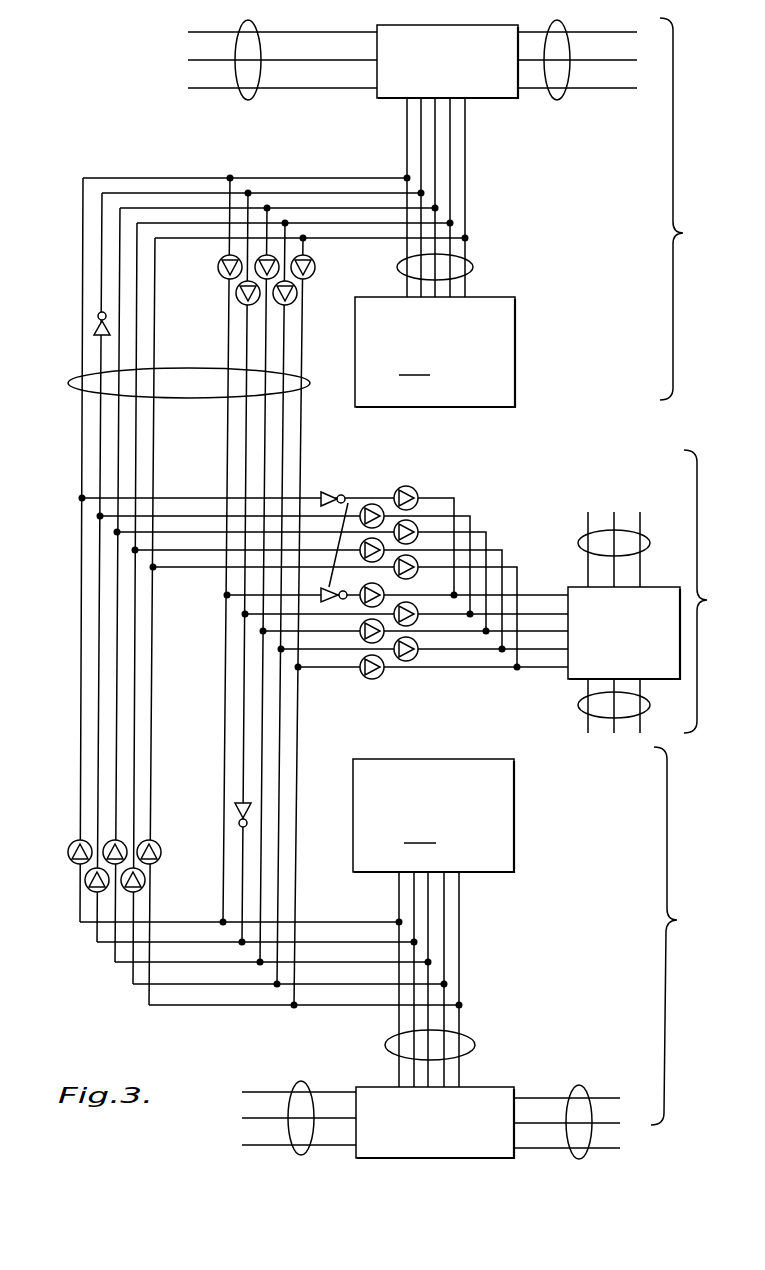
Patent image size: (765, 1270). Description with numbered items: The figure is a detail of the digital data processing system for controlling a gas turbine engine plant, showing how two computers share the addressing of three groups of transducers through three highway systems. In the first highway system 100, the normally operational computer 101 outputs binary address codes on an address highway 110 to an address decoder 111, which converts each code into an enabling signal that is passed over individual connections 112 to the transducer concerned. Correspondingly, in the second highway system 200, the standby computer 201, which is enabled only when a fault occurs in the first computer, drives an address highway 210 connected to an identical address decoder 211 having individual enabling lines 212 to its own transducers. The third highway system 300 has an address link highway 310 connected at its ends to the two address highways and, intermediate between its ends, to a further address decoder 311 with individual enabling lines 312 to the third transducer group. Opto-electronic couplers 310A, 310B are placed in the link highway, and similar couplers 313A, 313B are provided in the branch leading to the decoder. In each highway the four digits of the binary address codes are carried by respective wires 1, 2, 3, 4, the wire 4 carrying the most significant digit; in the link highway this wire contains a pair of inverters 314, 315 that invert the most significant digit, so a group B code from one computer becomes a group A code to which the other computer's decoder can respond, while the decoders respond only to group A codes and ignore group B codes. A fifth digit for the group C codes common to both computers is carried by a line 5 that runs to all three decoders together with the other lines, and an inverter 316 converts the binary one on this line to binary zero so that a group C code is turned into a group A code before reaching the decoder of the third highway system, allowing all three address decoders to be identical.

The wire 1 is at (465, 218).
The wire 2 is at (450, 189).
The wire 3 is at (435, 164).
The wire 4 is at (421, 143).
The line 5 is at (409, 128).
The first highway system 100 is at (695, 209).
The computer 101 is at (435, 352).
The address highway 110 is at (473, 267).
The address decoder 111 is at (393, 101).
The individual connections 112 is at (248, 99).
The second highway system 200 is at (693, 936).
The computer 201 is at (433, 815).
The address highway 210 is at (475, 1044).
The address decoder 211 is at (470, 1087).
The individual enabling lines 212 is at (302, 1082).
The third highway system 300 is at (719, 591).
The address link highway 310 is at (70, 383).
The opto-electronic couplers 310A is at (313, 255).
The opto-electronic couplers 310B is at (64, 849).
The address decoder 311 is at (568, 678).
The individual enabling lines 312 is at (578, 542).
The couplers 313A is at (416, 491).
The couplers 313B is at (380, 678).
The inverter 314 is at (236, 809).
The inverter 315 is at (111, 331).
The inverter 316 is at (349, 498).